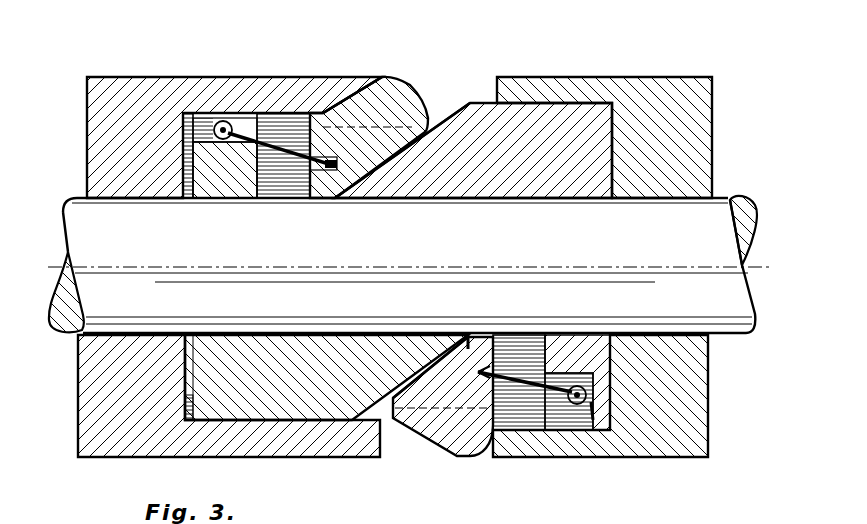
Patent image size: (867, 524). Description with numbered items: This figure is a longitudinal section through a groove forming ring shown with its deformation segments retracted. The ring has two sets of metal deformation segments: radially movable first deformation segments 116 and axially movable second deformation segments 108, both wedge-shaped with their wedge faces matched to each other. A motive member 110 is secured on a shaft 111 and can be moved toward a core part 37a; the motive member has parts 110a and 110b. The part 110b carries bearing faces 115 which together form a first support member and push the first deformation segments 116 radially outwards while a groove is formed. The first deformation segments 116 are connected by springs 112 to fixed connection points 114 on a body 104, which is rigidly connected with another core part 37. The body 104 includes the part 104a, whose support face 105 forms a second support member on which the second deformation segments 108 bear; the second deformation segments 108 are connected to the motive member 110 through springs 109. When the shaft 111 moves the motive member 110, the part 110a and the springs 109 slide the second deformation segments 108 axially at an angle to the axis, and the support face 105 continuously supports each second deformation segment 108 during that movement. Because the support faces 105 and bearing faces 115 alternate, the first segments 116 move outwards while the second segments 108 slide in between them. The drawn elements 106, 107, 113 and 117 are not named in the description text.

The core part 37 is at (660, 113).
The core part 37a is at (118, 108).
The body 104 is at (565, 343).
The part of body 104a is at (550, 143).
The support face 105 is at (398, 150).
The conical sleeve 106 is at (483, 103).
The wedge ring 107 is at (391, 76).
The second deformation segment 108 is at (374, 104).
The spring 109 is at (255, 142).
The motive member 110 is at (300, 407).
The part of motive member 110a is at (203, 118).
The part of motive member 110b is at (440, 348).
The shaft 111 is at (716, 212).
The spring 112 is at (553, 380).
The pivot pin 113 is at (221, 120).
The fixed connection point 114 is at (578, 403).
The bearing face 115 is at (422, 375).
The first deformation segment 116 is at (432, 418).
The housing part 117 is at (190, 380).